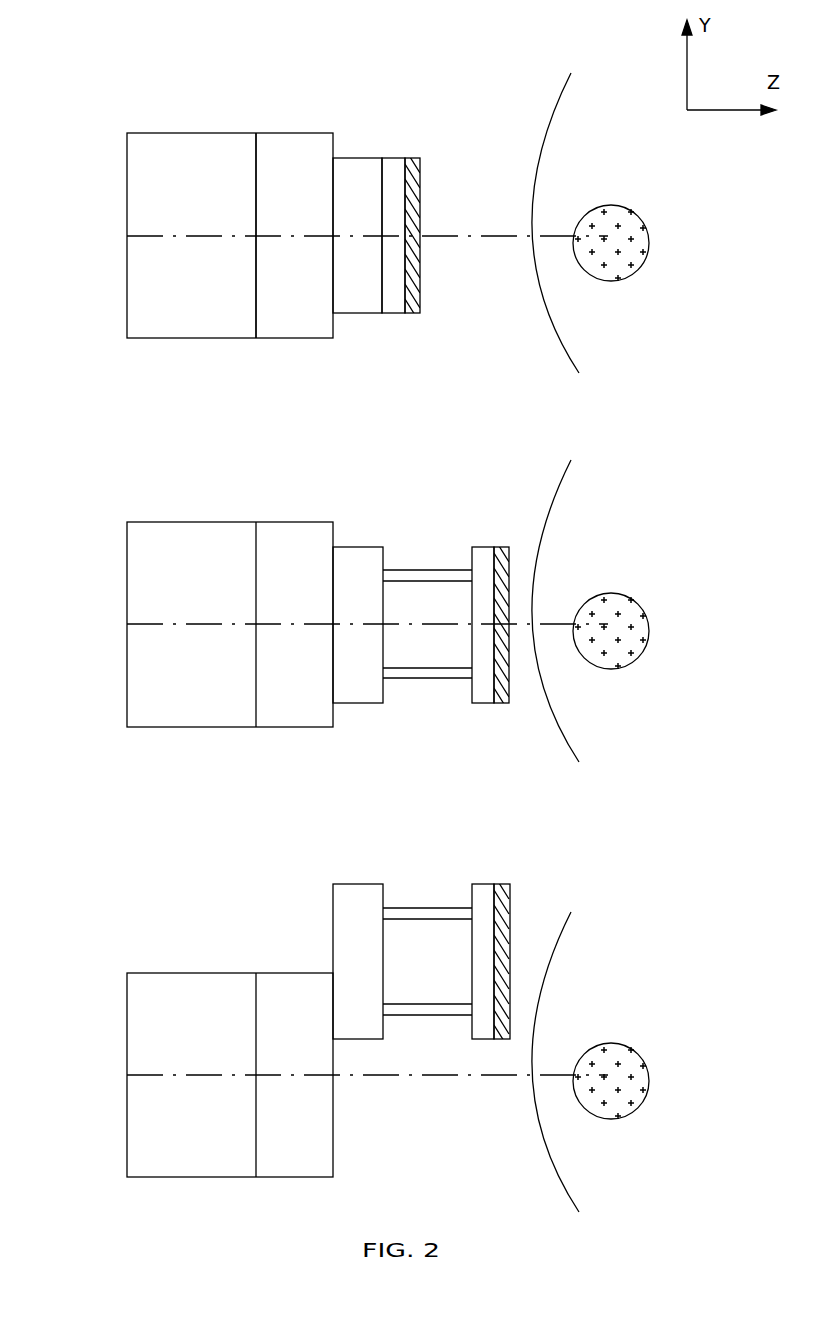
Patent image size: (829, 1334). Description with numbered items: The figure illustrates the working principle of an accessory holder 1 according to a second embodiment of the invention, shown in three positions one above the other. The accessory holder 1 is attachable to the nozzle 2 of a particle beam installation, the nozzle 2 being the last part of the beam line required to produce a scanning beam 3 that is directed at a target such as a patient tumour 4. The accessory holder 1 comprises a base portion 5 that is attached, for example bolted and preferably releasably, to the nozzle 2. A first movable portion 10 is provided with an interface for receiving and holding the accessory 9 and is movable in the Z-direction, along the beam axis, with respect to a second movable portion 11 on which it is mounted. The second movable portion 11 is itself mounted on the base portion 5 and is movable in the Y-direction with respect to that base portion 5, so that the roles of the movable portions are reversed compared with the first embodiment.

The accessory holder 1 is at (298, 316).
The nozzle 2 is at (142, 176).
The scanning beam 3 is at (467, 242).
The patient tumour 4 is at (621, 220).
The base portion 5 is at (298, 150).
The accessory 9 is at (417, 165).
The first movable portion 10 is at (393, 165).
The second movable portion 11 is at (348, 177).